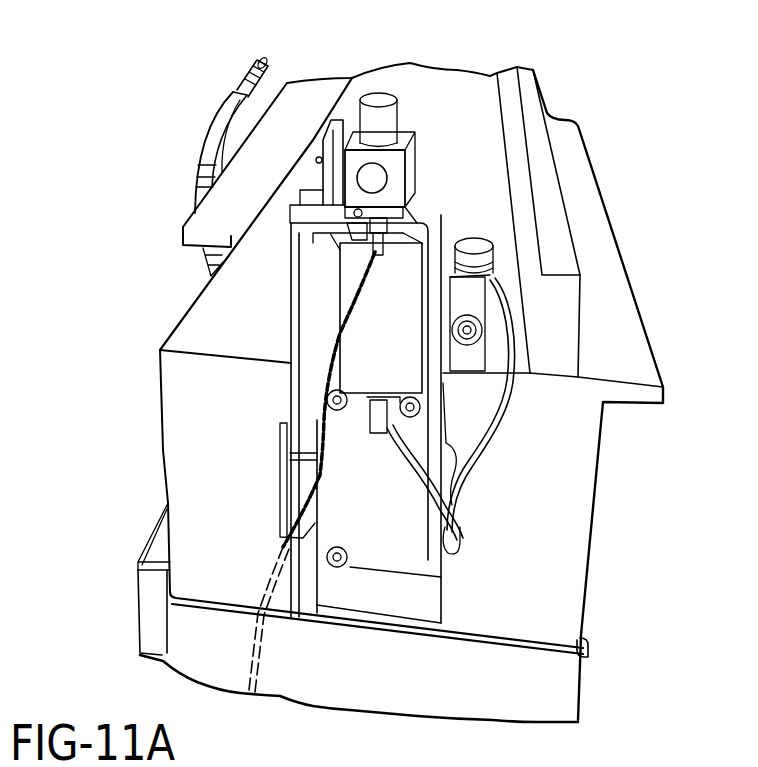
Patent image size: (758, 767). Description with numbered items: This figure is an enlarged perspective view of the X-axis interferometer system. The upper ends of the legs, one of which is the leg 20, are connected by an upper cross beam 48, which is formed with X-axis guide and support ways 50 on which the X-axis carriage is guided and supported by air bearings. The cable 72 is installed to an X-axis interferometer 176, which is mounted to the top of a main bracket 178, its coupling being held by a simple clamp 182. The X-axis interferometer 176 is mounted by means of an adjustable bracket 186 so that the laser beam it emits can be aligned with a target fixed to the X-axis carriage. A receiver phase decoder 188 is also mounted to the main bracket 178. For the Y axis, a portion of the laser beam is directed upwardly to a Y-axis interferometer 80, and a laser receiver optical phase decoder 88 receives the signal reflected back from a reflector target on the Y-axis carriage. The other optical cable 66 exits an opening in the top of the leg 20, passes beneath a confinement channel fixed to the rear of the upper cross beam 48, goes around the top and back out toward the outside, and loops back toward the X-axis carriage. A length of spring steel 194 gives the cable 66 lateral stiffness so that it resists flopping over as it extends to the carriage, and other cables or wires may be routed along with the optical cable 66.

The leg 20 is at (409, 679).
The upper cross beam 48 is at (240, 438).
The X-axis guide and support ways 50 is at (516, 175).
The optical cable 66 is at (243, 72).
The cable 72 is at (334, 333).
The Y-axis interferometer 80 is at (252, 203).
The laser receiver optical phase decoder 88 is at (350, 239).
The X-axis interferometer 176 is at (473, 123).
The main bracket 178 is at (500, 216).
The clamp 182 is at (388, 217).
The adjustable bracket 186 is at (322, 157).
The receiver phase decoder 188 is at (390, 383).
The length of spring steel 194 is at (205, 134).